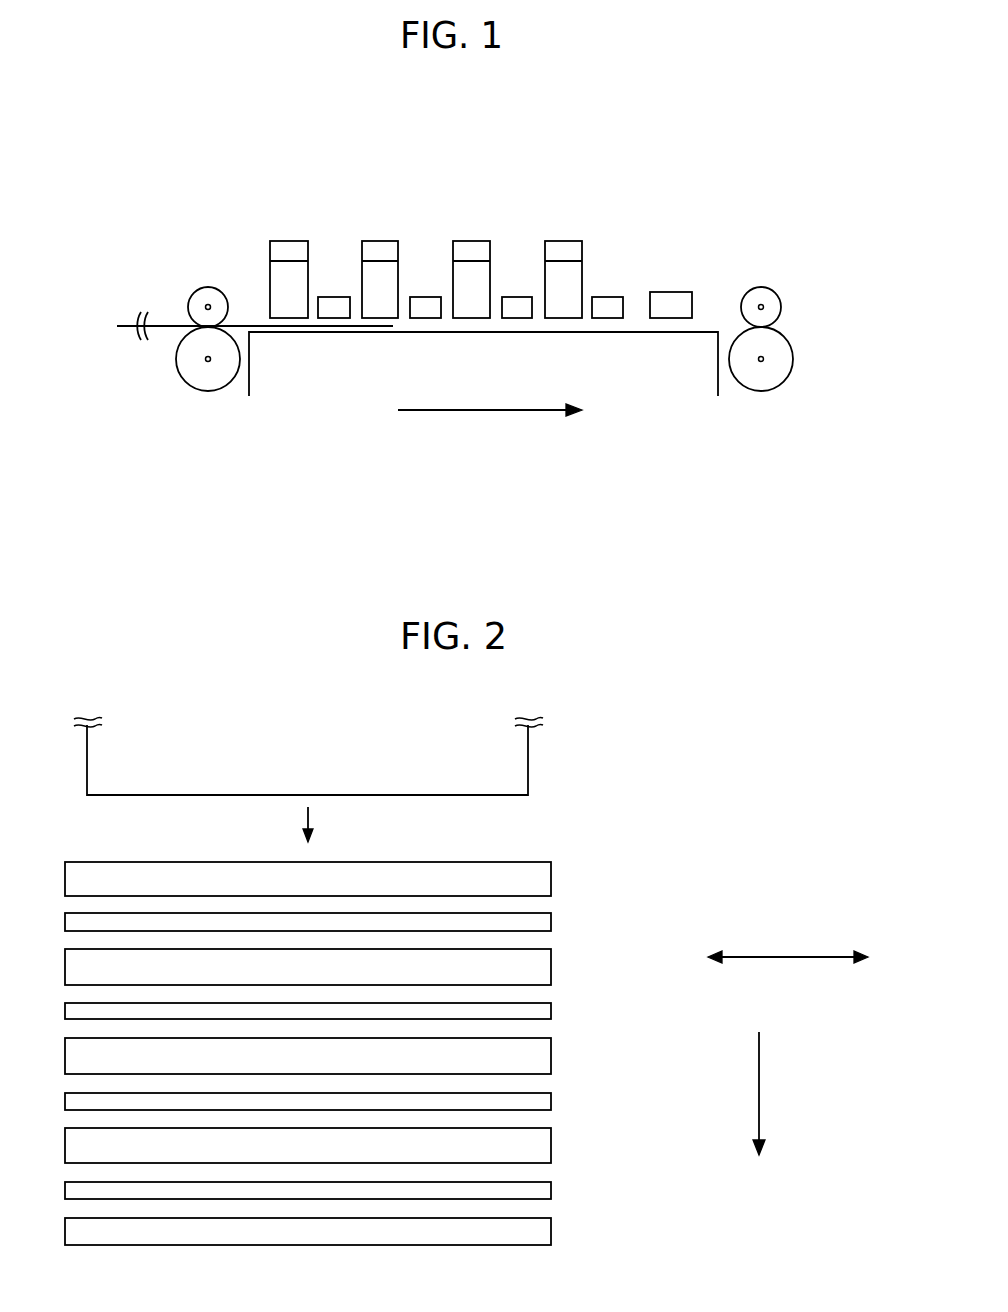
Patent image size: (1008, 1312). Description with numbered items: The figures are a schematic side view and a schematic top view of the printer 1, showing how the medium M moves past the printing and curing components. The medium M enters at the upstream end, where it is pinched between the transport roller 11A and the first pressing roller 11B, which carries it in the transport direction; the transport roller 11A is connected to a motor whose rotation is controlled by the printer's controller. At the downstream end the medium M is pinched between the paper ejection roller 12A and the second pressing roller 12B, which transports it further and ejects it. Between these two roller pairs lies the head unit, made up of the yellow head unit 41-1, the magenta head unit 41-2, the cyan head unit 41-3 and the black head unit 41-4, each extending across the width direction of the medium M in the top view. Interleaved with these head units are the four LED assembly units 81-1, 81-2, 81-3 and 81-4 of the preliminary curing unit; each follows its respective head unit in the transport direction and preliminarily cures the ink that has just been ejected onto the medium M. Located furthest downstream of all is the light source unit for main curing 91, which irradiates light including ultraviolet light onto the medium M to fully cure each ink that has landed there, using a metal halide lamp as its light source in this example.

In FIG. 1, the printer 1 is at (640, 138).
In FIG. 2, the printer 1 is at (718, 798).
In FIG. 1, the medium M is at (165, 328).
In FIG. 2, the medium M is at (518, 758).
In FIG. 1, the transport roller 11A is at (208, 380).
In FIG. 1, the first pressing roller 11B is at (207, 292).
In FIG. 1, the paper ejection roller 12A is at (760, 380).
In FIG. 1, the second pressing roller 12B is at (763, 292).
In FIG. 1, the yellow head unit 41-1 is at (286, 275).
In FIG. 2, the yellow head unit 41-1 is at (551, 877).
In FIG. 1, the magenta head unit 41-2 is at (382, 275).
In FIG. 2, the magenta head unit 41-2 is at (551, 966).
In FIG. 1, the cyan head unit 41-3 is at (470, 275).
In FIG. 2, the cyan head unit 41-3 is at (551, 1055).
In FIG. 1, the black head unit 41-4 is at (563, 275).
In FIG. 2, the black head unit 41-4 is at (551, 1144).
In FIG. 1, the LED assembly unit 81-1 is at (333, 303).
In FIG. 2, the LED assembly unit 81-1 is at (551, 921).
In FIG. 1, the LED assembly unit 81-2 is at (426, 303).
In FIG. 2, the LED assembly unit 81-2 is at (551, 1010).
In FIG. 1, the LED assembly unit 81-3 is at (519, 303).
In FIG. 2, the LED assembly unit 81-3 is at (551, 1100).
In FIG. 1, the LED assembly unit 81-4 is at (611, 303).
In FIG. 2, the LED assembly unit 81-4 is at (551, 1189).
In FIG. 1, the light source unit for main curing 91 is at (670, 292).
In FIG. 2, the light source unit for main curing 91 is at (551, 1230).